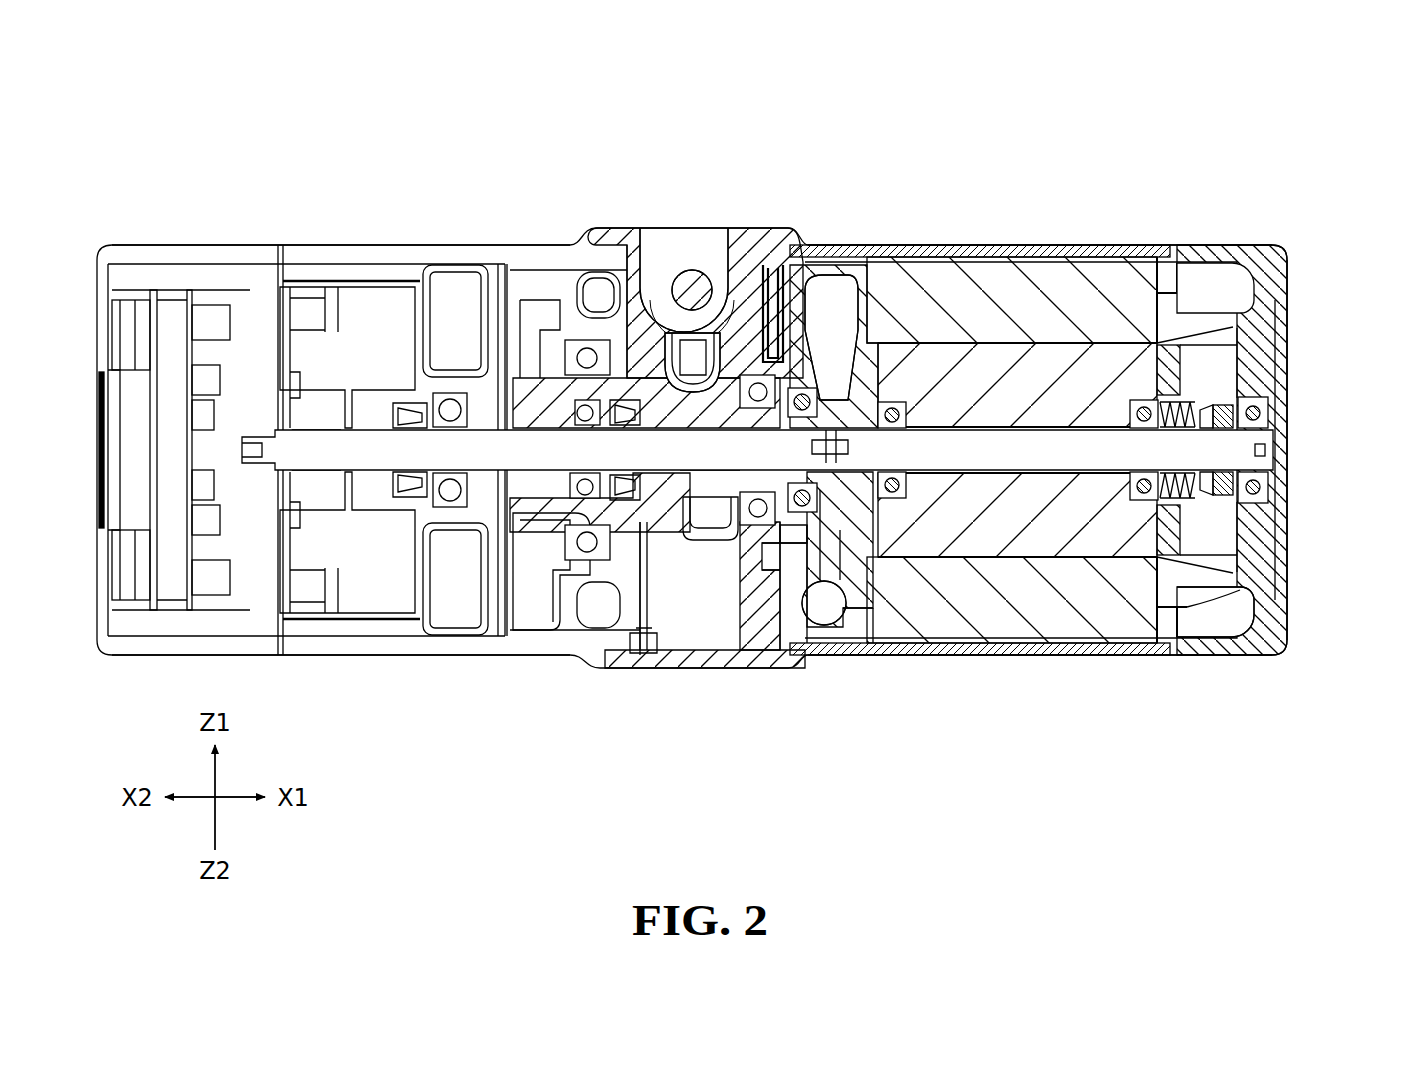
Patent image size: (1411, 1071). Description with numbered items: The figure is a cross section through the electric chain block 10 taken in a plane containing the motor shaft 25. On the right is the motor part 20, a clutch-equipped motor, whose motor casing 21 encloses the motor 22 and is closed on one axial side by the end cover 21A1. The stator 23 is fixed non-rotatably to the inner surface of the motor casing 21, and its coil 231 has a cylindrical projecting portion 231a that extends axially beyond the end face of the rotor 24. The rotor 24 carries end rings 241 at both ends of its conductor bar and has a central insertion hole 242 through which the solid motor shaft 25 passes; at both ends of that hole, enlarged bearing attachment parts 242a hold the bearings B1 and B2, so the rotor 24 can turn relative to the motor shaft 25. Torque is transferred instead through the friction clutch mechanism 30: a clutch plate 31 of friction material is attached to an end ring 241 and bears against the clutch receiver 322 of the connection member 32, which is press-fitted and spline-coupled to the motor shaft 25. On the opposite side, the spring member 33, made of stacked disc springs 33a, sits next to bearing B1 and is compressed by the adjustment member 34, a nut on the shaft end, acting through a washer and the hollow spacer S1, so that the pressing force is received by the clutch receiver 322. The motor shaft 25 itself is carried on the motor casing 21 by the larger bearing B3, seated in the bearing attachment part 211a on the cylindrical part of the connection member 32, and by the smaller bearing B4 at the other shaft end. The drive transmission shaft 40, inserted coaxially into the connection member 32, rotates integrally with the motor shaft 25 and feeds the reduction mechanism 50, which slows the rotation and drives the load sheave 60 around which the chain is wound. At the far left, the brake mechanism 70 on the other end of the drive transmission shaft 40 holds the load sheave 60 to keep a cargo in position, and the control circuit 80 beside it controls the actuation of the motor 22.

The electric chain block 10 is at (850, 93).
The motor part 20 is at (1035, 223).
The motor casing 21 is at (1143, 236).
The end cover 21A1 is at (1283, 318).
The motor 22 is at (952, 279).
The stator 23 is at (1093, 276).
The rotor 24 is at (1020, 548).
The motor shaft 25 is at (1205, 452).
The friction clutch mechanism 30 is at (812, 565).
The clutch plate 31 is at (812, 300).
The connection member 32 is at (740, 330).
The clutch receiver 322 is at (800, 612).
The spring member 33 is at (1210, 602).
The disc springs 33a is at (1140, 540).
The adjustment member 34 is at (1227, 503).
The drive transmission shaft 40 is at (667, 457).
The reduction mechanism 50 is at (540, 600).
The load sheave 60 is at (720, 478).
The brake mechanism 70 is at (357, 312).
The control circuit 80 is at (185, 318).
The bearing attachment part 211a is at (716, 415).
The coil 231 is at (838, 545).
The cylindrical projecting portion 231a is at (858, 525).
The end rings 241 is at (888, 398).
The insertion hole 242 is at (1062, 470).
The bearing attachment parts 242a is at (1212, 330).
The bearing B1 is at (1165, 385).
The bearing B2 is at (900, 400).
The bearing B3 is at (738, 555).
The bearing B4 is at (1270, 410).
The spacer S1 is at (1205, 408).